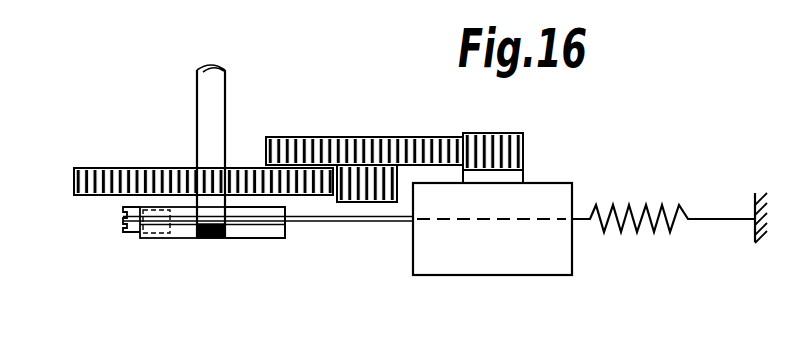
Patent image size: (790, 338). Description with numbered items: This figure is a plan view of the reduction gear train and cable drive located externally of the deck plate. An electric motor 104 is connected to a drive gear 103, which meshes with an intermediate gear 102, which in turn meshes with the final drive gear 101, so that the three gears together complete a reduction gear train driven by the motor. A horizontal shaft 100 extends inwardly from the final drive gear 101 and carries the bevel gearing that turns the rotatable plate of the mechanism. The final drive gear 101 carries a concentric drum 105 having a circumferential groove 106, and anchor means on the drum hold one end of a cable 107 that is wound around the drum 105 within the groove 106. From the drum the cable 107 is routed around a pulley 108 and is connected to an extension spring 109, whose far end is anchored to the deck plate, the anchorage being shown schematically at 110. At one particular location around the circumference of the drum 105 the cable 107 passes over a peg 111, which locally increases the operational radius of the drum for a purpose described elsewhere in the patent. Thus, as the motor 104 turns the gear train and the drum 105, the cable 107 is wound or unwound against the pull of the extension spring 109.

The horizontal shaft 100 is at (199, 104).
The final drive gear 101 is at (98, 175).
The intermediate gear 102 is at (398, 146).
The drive gear 103 is at (508, 143).
The electric motor 104 is at (496, 258).
The drum 105 is at (181, 229).
The circumferential groove 106 is at (264, 212).
The cable 107 is at (357, 220).
The pulley 108 is at (126, 233).
The extension spring 109 is at (679, 203).
The anchor 110 is at (752, 231).
The peg 111 is at (220, 237).